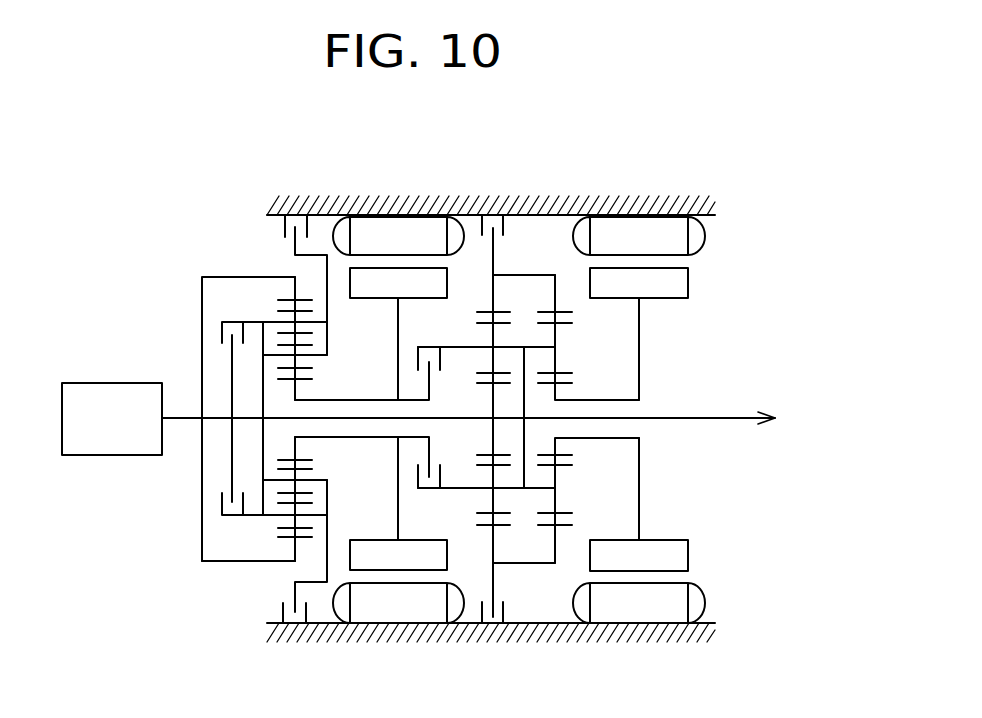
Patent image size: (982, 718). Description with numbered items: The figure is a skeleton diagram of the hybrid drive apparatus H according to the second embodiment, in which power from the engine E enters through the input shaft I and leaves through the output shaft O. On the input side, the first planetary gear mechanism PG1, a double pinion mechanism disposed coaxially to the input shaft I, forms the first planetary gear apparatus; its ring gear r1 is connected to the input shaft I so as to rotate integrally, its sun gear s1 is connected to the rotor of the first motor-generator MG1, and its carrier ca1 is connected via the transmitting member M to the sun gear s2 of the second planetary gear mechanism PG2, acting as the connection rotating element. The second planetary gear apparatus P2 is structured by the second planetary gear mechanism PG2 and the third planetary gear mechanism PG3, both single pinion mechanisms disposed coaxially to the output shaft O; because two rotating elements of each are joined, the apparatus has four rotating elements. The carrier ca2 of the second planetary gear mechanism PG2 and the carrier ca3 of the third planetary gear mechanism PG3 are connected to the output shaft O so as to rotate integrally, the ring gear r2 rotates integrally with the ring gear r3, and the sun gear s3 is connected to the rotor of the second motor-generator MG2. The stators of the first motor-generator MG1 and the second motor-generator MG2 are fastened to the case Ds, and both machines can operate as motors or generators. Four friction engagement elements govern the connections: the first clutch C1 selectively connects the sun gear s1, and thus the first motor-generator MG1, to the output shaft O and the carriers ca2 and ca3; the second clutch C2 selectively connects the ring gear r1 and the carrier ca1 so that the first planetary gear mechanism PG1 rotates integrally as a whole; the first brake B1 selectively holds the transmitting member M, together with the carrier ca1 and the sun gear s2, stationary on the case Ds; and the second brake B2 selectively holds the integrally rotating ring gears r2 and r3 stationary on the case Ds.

The hybrid drive apparatus H is at (145, 180).
The case Ds is at (297, 200).
The first brake B1 is at (308, 229).
The second brake B2 is at (482, 232).
The first clutch C1 is at (418, 472).
The second clutch C2 is at (226, 320).
The first motor-generator MG1 is at (397, 213).
The second motor-generator MG2 is at (707, 263).
The second planetary gear apparatus P2 is at (638, 165).
The first planetary gear mechanism PG1 is at (258, 267).
The second planetary gear mechanism PG2 is at (505, 265).
The third planetary gear mechanism PG3 is at (555, 265).
The engine E is at (115, 383).
The input shaft I is at (183, 417).
The transmitting member M is at (355, 422).
The output shaft O is at (731, 415).
The sun gear s1 is at (296, 455).
The carrier ca1 is at (328, 332).
The ring gear r1 is at (287, 540).
The sun gear s2 is at (490, 435).
The carrier ca2 is at (495, 341).
The ring gear r2 is at (500, 530).
The sun gear s3 is at (572, 388).
The carrier ca3 is at (555, 477).
The ring gear r3 is at (560, 528).